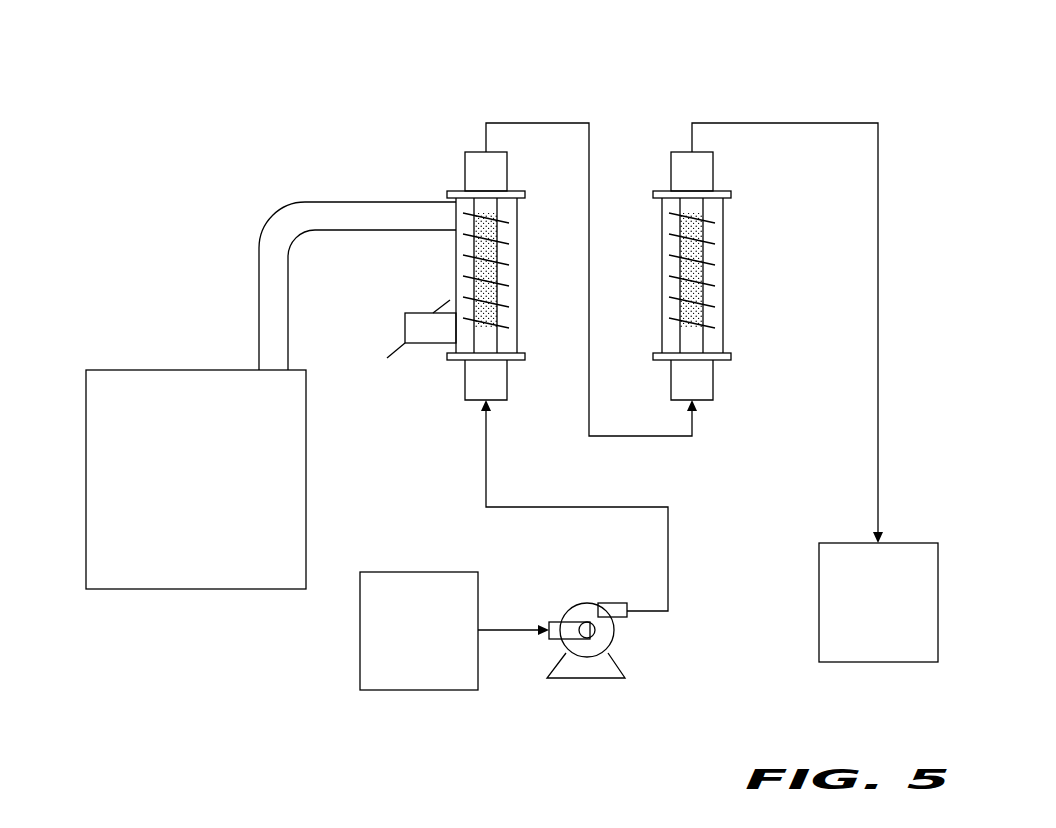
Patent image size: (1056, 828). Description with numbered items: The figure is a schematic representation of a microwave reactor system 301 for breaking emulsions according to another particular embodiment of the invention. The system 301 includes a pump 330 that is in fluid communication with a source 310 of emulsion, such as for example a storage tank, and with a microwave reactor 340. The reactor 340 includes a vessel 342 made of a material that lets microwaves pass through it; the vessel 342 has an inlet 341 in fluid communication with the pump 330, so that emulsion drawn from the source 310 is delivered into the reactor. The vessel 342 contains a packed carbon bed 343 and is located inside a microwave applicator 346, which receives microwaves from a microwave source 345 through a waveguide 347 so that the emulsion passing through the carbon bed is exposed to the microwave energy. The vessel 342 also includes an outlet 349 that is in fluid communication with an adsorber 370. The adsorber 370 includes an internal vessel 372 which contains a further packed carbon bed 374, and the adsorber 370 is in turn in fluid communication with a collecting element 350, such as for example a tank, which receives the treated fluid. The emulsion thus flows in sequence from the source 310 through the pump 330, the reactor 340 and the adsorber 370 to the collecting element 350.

The microwave reactor system 301 is at (181, 127).
The source of emulsion 310 is at (412, 670).
The pump 330 is at (587, 648).
The microwave reactor 340 is at (358, 142).
The inlet 341 is at (478, 380).
The vessel 342 is at (471, 204).
The packed carbon bed 343 is at (501, 240).
The microwave source 345 is at (102, 400).
The microwave applicator 346 is at (456, 266).
The waveguide 347 is at (272, 280).
The outlet 349 is at (494, 163).
The collecting element 350 is at (910, 602).
The adsorber 370 is at (744, 238).
The internal vessel 372 is at (713, 340).
The packed carbon bed 374 is at (705, 250).